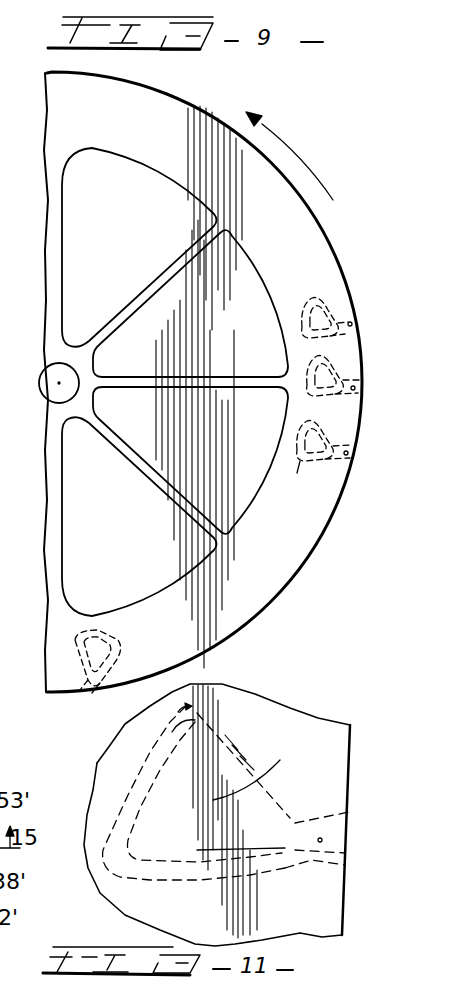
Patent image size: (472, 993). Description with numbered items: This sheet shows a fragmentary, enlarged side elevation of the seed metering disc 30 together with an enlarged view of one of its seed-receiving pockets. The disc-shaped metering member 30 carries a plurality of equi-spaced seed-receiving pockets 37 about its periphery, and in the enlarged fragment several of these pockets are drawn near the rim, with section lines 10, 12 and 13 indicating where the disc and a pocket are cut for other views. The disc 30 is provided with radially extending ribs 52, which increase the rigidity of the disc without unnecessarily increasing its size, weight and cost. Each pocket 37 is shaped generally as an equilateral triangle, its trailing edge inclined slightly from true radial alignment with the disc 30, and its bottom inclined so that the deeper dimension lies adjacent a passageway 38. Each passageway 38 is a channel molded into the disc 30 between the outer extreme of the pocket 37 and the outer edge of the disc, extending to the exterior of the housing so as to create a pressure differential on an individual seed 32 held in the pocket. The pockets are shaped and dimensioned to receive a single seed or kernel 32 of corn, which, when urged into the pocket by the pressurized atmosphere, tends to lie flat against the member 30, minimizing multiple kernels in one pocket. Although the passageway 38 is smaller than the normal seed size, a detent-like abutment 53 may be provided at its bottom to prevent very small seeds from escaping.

In FIG. 9, the section line 10- 10 is at (50, 63).
In FIG. 11, the section line 12- 12 is at (320, 797).
In FIG. 11, the section line 13- 13 is at (352, 833).
In FIG. 9, the metering disc 30 is at (312, 540).
In FIG. 11, the metering disc 30 is at (325, 922).
In FIG. 9, the seed 32 is at (327, 380).
In FIG. 11, the seed 32 is at (261, 775).
In FIG. 9, the seed-receiving pocket 37 is at (298, 478).
In FIG. 11, the seed-receiving pocket 37 is at (227, 740).
In FIG. 9, the passageway 38 is at (355, 447).
In FIG. 11, the passageway 38 is at (347, 823).
In FIG. 9, the radially extending rib 52 is at (202, 522).
In FIG. 9, the detent-like abutment 53 is at (353, 325).
In FIG. 11, the detent-like abutment 53 is at (372, 867).